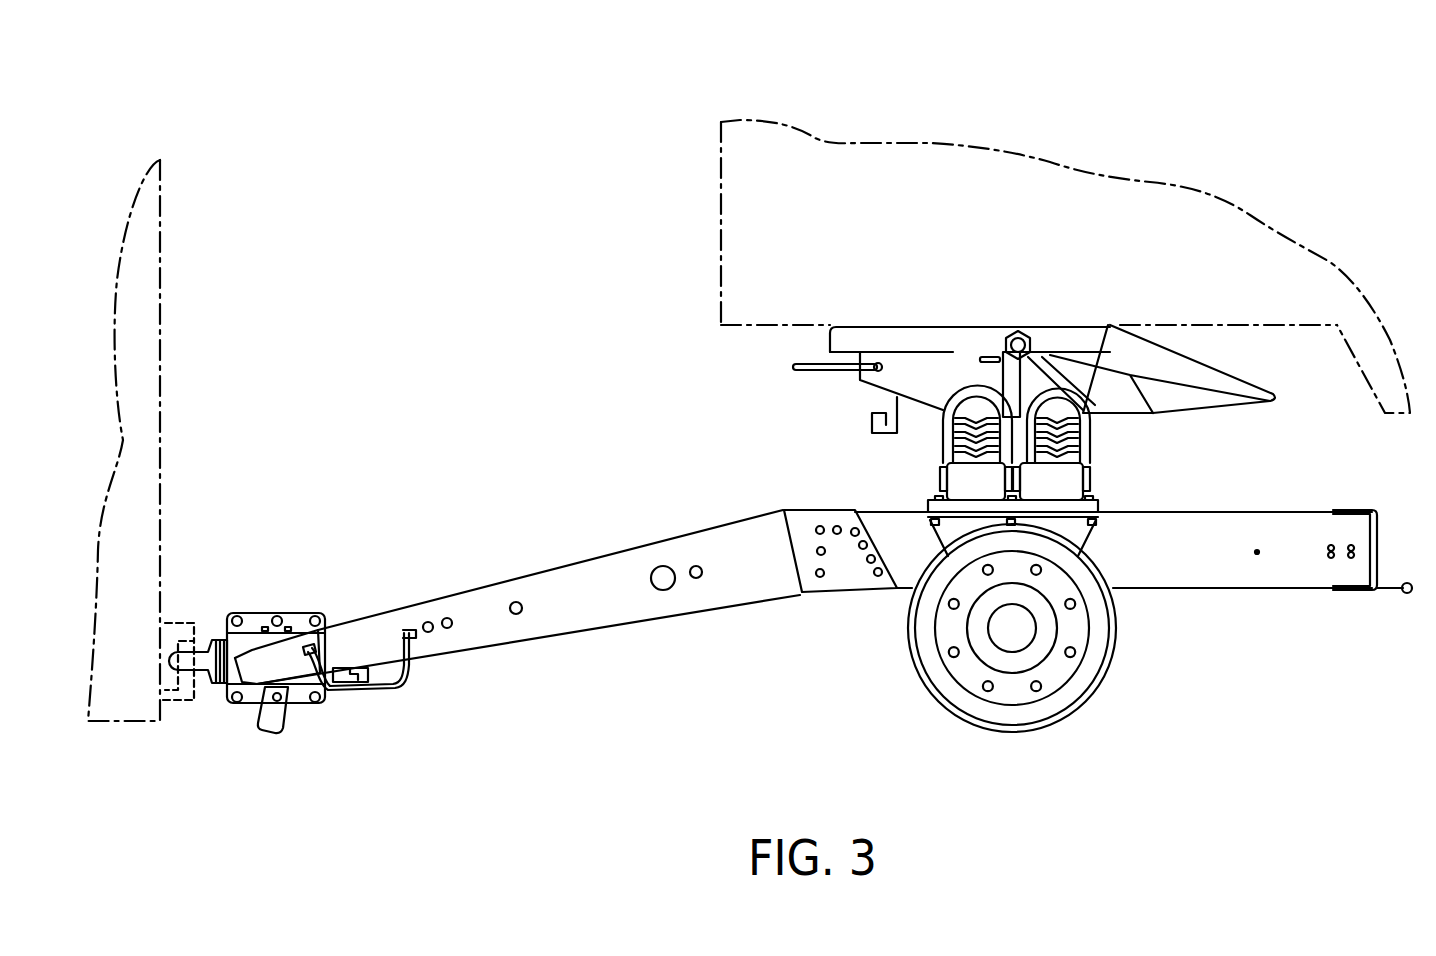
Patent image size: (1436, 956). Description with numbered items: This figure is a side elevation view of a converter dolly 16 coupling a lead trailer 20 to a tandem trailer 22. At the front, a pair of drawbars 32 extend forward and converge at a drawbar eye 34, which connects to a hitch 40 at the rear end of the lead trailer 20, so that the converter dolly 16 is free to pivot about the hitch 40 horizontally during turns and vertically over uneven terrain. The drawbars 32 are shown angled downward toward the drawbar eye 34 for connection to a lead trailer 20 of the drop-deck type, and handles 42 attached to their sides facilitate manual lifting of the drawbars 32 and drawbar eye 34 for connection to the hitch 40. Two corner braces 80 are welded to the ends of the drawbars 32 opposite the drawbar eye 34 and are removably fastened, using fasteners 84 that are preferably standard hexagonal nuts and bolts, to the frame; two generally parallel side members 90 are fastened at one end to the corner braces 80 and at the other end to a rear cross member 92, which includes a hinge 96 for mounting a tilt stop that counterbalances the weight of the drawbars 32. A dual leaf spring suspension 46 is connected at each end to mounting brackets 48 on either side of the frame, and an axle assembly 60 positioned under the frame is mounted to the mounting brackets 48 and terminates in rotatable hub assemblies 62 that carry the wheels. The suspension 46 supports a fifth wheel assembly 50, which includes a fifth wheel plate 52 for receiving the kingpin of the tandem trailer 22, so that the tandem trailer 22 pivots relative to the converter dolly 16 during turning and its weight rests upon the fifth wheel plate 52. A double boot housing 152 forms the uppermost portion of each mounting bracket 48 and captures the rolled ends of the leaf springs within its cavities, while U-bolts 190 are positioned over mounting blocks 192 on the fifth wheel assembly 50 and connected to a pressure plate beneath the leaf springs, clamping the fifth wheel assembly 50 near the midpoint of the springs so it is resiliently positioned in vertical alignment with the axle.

The converter dolly 16 is at (537, 291).
The lead trailer 20 is at (160, 366).
The tandem trailer 22 is at (721, 198).
The drawbars 32 is at (586, 620).
The drawbar eye 34 is at (208, 665).
The hitch 40 is at (167, 622).
The handles 42 is at (390, 686).
The dual leaf spring suspension 46 is at (1018, 393).
The mounting brackets 48 is at (1120, 504).
The fifth wheel assembly 50 is at (1222, 416).
The fifth wheel plate 52 is at (923, 338).
The axle assembly 60 is at (1048, 643).
The hub assemblies 62 is at (1077, 686).
The corner braces 80 is at (840, 552).
The fasteners 84 is at (837, 526).
The side members 90 is at (1228, 566).
The rear cross member 92 is at (1378, 537).
The hinge 96 is at (1408, 582).
The double boot housing 152 is at (957, 482).
The U-bolts 190 is at (943, 444).
The mounting blocks 192 is at (972, 405).